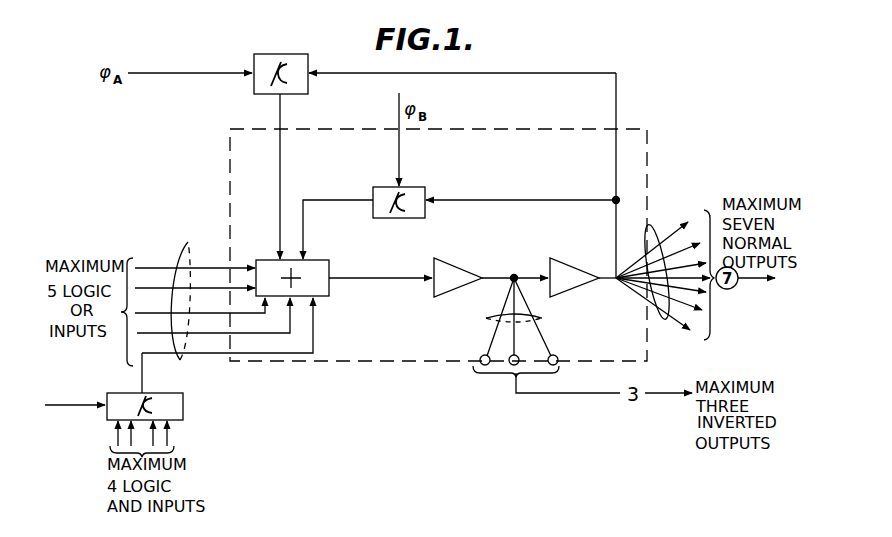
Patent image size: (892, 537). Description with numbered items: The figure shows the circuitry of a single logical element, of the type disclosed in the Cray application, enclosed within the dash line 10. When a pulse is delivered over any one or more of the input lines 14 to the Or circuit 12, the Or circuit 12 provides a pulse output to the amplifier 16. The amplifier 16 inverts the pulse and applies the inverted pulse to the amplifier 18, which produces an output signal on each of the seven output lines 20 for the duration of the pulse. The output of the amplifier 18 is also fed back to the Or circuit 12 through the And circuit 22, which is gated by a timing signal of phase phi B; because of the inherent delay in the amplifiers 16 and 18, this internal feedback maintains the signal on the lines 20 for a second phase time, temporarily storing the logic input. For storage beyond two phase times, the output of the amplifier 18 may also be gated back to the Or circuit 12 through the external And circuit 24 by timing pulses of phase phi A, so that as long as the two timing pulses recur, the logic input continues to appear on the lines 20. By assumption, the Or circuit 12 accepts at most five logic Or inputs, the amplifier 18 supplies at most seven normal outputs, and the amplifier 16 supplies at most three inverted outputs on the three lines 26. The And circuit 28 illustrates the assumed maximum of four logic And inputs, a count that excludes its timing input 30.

The dash line 10 is at (354, 362).
The Or circuit 12 is at (332, 267).
The input lines 14 is at (188, 259).
The amplifier 16 is at (461, 268).
The amplifier 18 is at (572, 268).
The output lines 20 is at (662, 228).
The And circuit 22 is at (425, 190).
The And circuit 24 is at (291, 57).
The lines 26 is at (535, 322).
The And circuit 28 is at (184, 408).
The timing input 30 is at (83, 396).